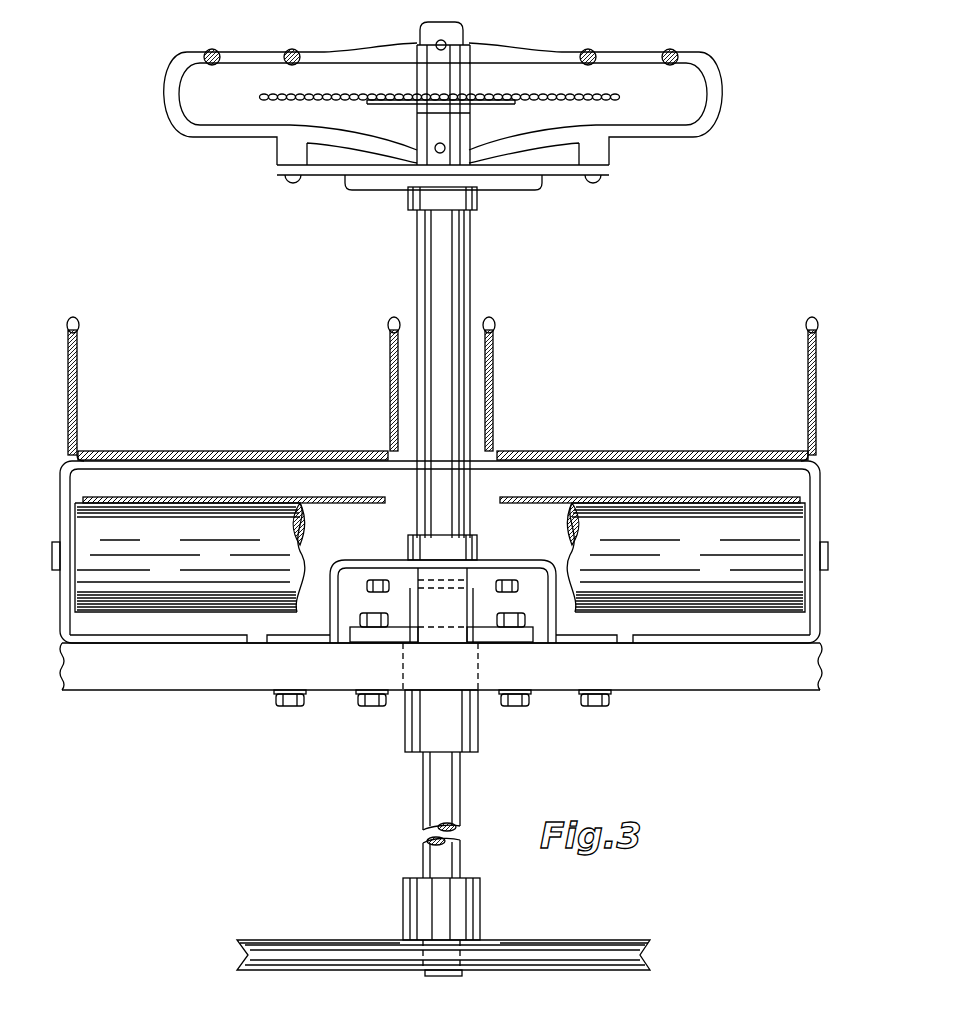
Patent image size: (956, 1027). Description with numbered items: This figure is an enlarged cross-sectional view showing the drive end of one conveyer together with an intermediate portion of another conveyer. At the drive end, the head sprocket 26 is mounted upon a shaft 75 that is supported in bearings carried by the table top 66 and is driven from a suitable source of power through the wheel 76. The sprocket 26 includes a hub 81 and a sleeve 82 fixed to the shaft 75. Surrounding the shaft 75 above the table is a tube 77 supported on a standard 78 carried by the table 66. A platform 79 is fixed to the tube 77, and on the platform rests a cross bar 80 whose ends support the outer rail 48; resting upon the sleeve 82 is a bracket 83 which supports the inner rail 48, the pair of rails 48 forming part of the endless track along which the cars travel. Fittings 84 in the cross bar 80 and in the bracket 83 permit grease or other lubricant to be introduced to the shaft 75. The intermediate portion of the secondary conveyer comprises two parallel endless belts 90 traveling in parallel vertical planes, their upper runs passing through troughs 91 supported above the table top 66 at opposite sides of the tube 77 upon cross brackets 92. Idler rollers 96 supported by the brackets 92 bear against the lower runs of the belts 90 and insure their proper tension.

The head sprocket 26 is at (606, 95).
The rails 48 is at (285, 54).
The table top 66 is at (340, 673).
The shaft 75 is at (437, 783).
The wheel 76 is at (289, 940).
The tube 77 is at (456, 262).
The standard 78 is at (370, 578).
The platform 79 is at (398, 178).
The cross bar 80 is at (262, 127).
The hub 81 is at (447, 114).
The sleeve 82 is at (453, 78).
The bracket 83 is at (470, 46).
The fittings 84 is at (434, 43).
The endless belts 90 is at (191, 452).
The troughs 91 is at (79, 370).
The cross brackets 92 is at (166, 465).
The idler rollers 96 is at (440, 554).